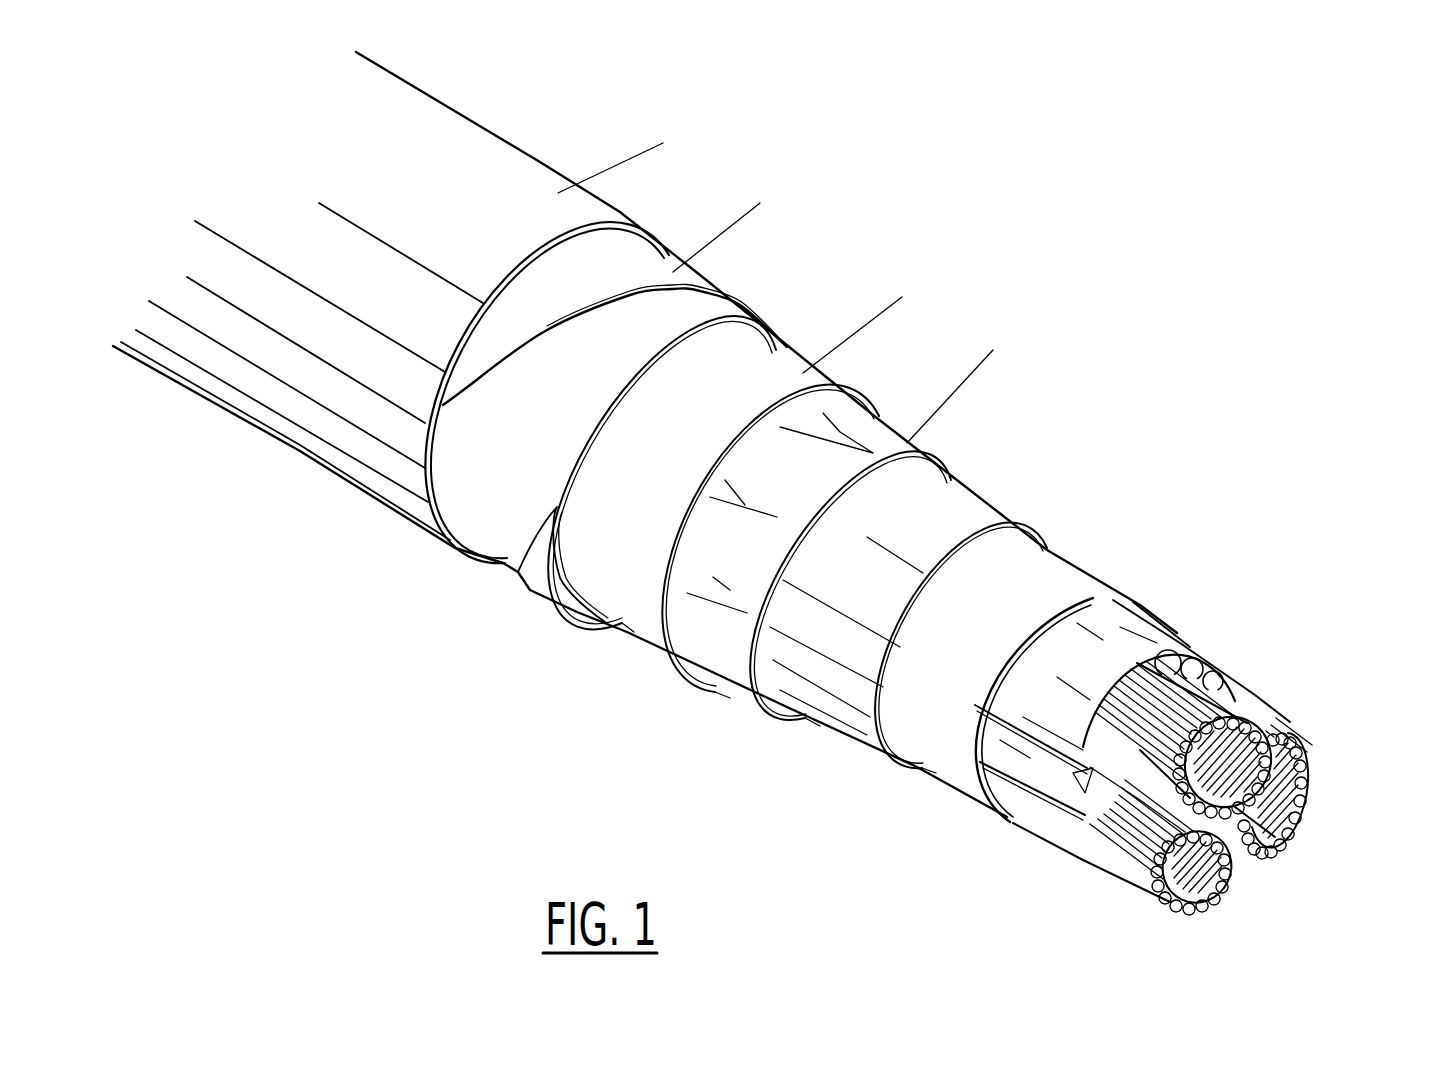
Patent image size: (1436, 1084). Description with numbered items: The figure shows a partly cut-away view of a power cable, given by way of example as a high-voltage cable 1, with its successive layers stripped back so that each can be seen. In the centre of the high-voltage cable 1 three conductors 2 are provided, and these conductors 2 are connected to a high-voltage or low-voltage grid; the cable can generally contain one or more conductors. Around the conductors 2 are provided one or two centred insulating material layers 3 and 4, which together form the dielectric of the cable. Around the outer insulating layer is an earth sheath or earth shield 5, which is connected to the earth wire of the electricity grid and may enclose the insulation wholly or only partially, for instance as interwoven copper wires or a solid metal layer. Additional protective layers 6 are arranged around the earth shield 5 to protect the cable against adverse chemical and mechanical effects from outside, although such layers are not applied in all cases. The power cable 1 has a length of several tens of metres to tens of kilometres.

The high-voltage cable 1 is at (985, 397).
The conductors 2 is at (1253, 717).
The insulating material layer 3 is at (1155, 637).
The insulating material layer 4 is at (1072, 572).
The earth sheath or earth shield 5 is at (977, 503).
The additional protective layers 6 is at (645, 141).